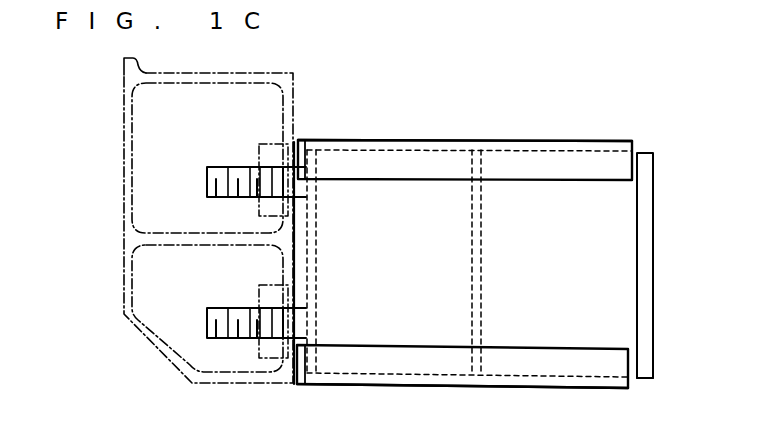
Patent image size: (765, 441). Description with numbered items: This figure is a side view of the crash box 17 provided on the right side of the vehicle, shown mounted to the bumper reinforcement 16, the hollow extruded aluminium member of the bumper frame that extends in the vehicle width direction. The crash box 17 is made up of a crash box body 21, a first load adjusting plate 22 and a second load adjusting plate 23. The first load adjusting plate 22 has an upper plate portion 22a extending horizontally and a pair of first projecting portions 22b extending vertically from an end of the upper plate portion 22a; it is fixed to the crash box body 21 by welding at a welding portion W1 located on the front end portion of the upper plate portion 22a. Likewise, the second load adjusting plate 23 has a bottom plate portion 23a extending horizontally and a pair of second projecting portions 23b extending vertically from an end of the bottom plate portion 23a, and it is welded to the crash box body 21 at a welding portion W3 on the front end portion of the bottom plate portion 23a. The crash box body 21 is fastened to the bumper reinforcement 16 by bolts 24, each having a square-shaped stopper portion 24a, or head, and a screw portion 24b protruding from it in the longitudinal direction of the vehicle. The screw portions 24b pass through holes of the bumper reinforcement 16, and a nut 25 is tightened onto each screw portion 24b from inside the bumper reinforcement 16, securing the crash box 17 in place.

The bumper reinforcement 16 is at (175, 73).
The crash box 17 is at (638, 106).
The crash box body 21 is at (293, 258).
The first load adjusting plate 22 is at (563, 142).
The upper plate portion 22a is at (460, 139).
The first projecting portion 22b is at (623, 165).
The second load adjusting plate 23 is at (528, 388).
The bottom plate portion 23a is at (395, 387).
The second projecting portion 23b is at (625, 358).
The bolt 24 is at (207, 175).
The stopper portion 24a is at (317, 203).
The screw portion 24b is at (232, 197).
The nut 25 is at (259, 155).
The welding portion W1 is at (297, 142).
The welding portion W3 is at (293, 386).